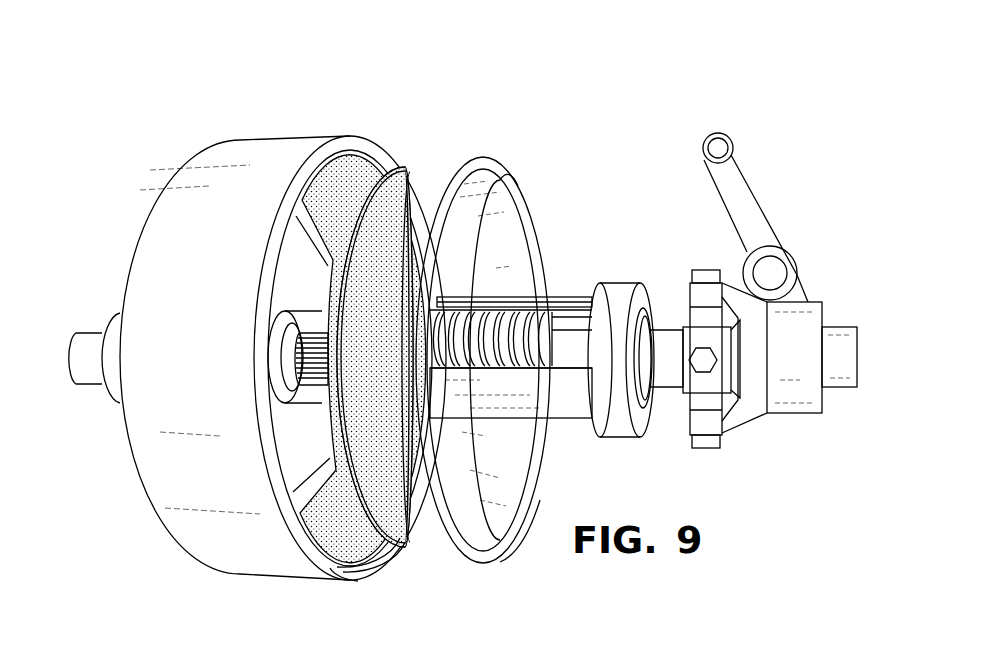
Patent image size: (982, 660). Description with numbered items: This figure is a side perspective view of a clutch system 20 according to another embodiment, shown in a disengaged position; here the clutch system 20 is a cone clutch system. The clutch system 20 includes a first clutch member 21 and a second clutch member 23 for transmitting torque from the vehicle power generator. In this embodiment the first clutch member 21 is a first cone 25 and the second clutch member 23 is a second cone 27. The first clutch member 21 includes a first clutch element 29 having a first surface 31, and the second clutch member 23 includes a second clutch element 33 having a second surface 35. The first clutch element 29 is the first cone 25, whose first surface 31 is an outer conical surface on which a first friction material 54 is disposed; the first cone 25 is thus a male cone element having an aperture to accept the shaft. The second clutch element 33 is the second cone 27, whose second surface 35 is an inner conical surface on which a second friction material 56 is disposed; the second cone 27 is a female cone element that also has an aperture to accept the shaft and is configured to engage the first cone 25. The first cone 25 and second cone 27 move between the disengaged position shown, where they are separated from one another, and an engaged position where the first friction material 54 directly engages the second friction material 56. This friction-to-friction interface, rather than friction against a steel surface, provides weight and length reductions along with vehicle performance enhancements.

The clutch system 20 is at (572, 116).
The first clutch member 21 is at (520, 256).
The second clutch member 23 is at (253, 172).
The first cone 25 is at (505, 205).
The second cone 27 is at (262, 575).
The first clutch element 29 is at (508, 537).
The first surface 31 is at (415, 478).
The second clutch element 33 is at (338, 572).
The second surface 35 is at (372, 541).
The first friction material 54 is at (414, 181).
The second friction material 56 is at (350, 183).